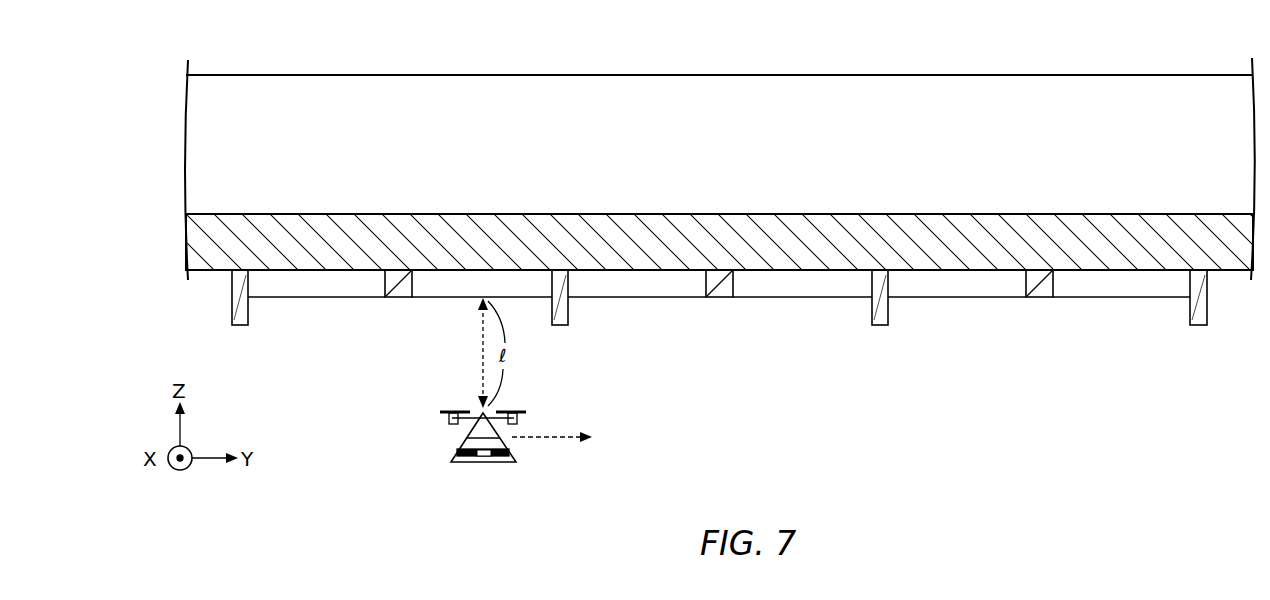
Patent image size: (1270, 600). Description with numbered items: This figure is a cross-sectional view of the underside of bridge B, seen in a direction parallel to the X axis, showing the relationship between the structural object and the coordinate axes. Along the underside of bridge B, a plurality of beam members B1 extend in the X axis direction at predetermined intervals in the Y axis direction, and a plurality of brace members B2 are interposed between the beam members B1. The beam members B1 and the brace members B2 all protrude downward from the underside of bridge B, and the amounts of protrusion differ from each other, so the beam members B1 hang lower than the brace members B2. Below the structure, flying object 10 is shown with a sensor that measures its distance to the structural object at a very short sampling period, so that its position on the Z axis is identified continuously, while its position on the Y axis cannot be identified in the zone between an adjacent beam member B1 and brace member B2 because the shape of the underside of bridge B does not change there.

The bridge B is at (283, 221).
The beam member B1 is at (236, 326).
The brace member B2 is at (396, 289).
The flying object 10 is at (476, 432).